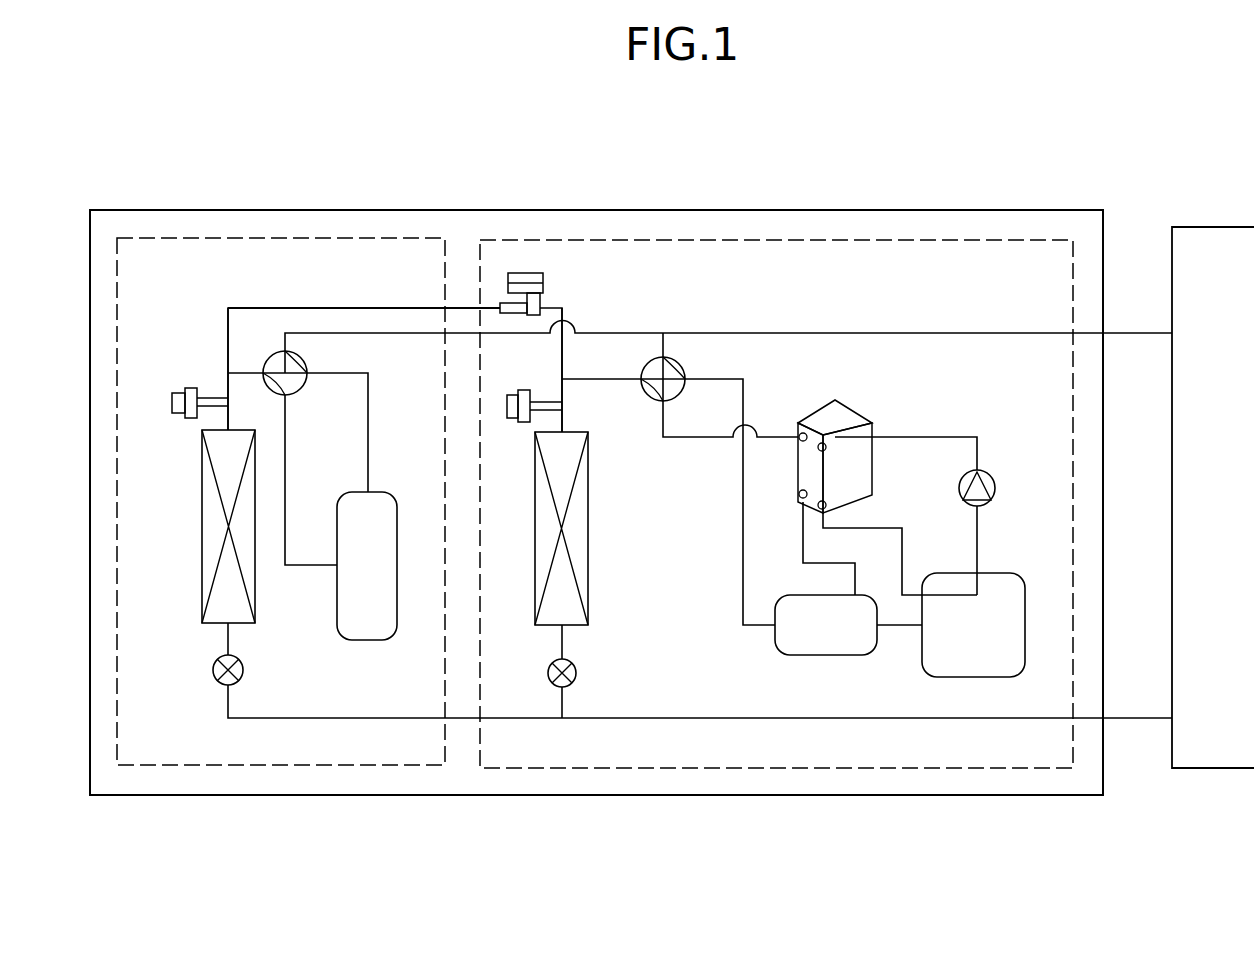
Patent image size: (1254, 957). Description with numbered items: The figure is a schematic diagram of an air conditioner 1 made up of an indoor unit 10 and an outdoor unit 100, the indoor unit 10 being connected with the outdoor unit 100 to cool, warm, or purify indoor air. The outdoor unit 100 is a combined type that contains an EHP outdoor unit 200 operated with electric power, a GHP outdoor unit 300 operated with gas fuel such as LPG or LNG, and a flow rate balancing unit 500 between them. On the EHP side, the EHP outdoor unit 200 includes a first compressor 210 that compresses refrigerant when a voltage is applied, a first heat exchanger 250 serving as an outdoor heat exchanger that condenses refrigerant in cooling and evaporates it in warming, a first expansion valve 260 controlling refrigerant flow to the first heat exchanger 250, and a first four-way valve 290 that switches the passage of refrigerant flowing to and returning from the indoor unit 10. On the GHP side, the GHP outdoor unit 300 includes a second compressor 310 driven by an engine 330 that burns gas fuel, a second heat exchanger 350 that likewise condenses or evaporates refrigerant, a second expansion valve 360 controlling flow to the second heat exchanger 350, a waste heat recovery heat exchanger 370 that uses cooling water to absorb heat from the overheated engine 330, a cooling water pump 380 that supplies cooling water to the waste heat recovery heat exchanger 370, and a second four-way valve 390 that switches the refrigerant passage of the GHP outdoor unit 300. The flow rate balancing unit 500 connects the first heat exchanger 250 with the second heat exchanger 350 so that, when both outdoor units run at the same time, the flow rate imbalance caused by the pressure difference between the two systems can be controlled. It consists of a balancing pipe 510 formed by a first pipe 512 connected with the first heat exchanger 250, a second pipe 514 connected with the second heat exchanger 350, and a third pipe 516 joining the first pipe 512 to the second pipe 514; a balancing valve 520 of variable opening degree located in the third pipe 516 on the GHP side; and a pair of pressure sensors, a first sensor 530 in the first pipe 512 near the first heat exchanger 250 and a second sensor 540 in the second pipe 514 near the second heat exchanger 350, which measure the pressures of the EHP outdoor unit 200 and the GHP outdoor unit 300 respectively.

The air conditioner 1 is at (168, 186).
The indoor unit 10 is at (1228, 227).
The outdoor unit 100 is at (630, 210).
The EHP outdoor unit 200 is at (333, 238).
The first compressor 210 is at (366, 640).
The first heat exchanger 250 is at (202, 533).
The first expansion valve 260 is at (213, 672).
The first four-way valve 290 is at (303, 360).
The GHP outdoor unit 300 is at (912, 240).
The second compressor 310 is at (825, 655).
The engine 330 is at (1005, 573).
The second heat exchanger 350 is at (588, 548).
The second expansion valve 360 is at (577, 672).
The waste heat recovery heat exchanger 370 is at (872, 475).
The cooling water pump 380 is at (995, 490).
The second four-way valve 390 is at (660, 361).
The flow rate balancing unit 500 is at (460, 286).
The balancing pipe 510 is at (263, 300).
The first pipe 512 is at (228, 345).
The second pipe 514 is at (562, 386).
The third pipe 516 is at (310, 307).
The balancing valve 520 is at (546, 280).
The first sensor 530 is at (172, 402).
The second sensor 540 is at (513, 422).